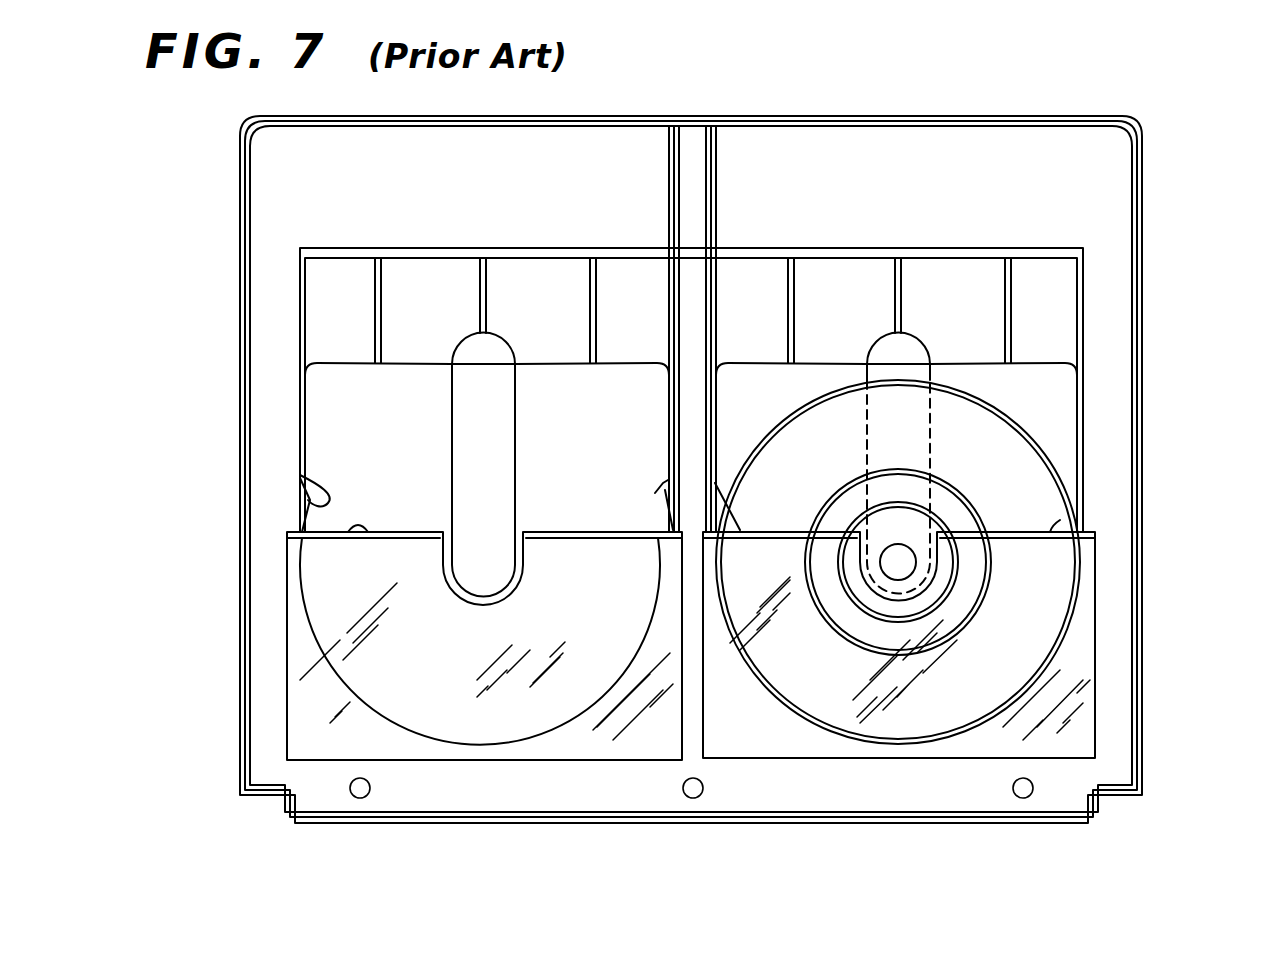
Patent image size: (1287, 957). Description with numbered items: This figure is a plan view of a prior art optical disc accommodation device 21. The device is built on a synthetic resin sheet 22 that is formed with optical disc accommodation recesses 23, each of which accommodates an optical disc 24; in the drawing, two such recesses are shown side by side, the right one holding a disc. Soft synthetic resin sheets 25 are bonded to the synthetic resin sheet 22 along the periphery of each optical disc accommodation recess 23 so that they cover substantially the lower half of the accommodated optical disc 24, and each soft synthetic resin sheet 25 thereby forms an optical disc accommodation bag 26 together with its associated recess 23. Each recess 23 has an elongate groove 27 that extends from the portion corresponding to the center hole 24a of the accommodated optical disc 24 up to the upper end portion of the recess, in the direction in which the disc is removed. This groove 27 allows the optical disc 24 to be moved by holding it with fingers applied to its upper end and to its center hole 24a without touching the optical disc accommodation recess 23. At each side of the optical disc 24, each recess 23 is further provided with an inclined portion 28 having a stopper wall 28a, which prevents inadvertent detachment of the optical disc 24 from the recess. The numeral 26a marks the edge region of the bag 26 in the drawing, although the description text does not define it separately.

The optical disc accommodation device 21 is at (1018, 106).
The synthetic resin sheet 22 is at (637, 153).
The optical disc accommodation recess 23 is at (450, 720).
The optical disc 24 is at (1003, 412).
The center hole 24a is at (899, 572).
The soft synthetic resin sheet 25 is at (287, 718).
The optical disc accommodation bag 26 is at (422, 672).
The disc edge 26a is at (360, 524).
The elongate groove 27 is at (927, 366).
The inclined portion 28 is at (307, 502).
The stopper wall 28a is at (300, 475).